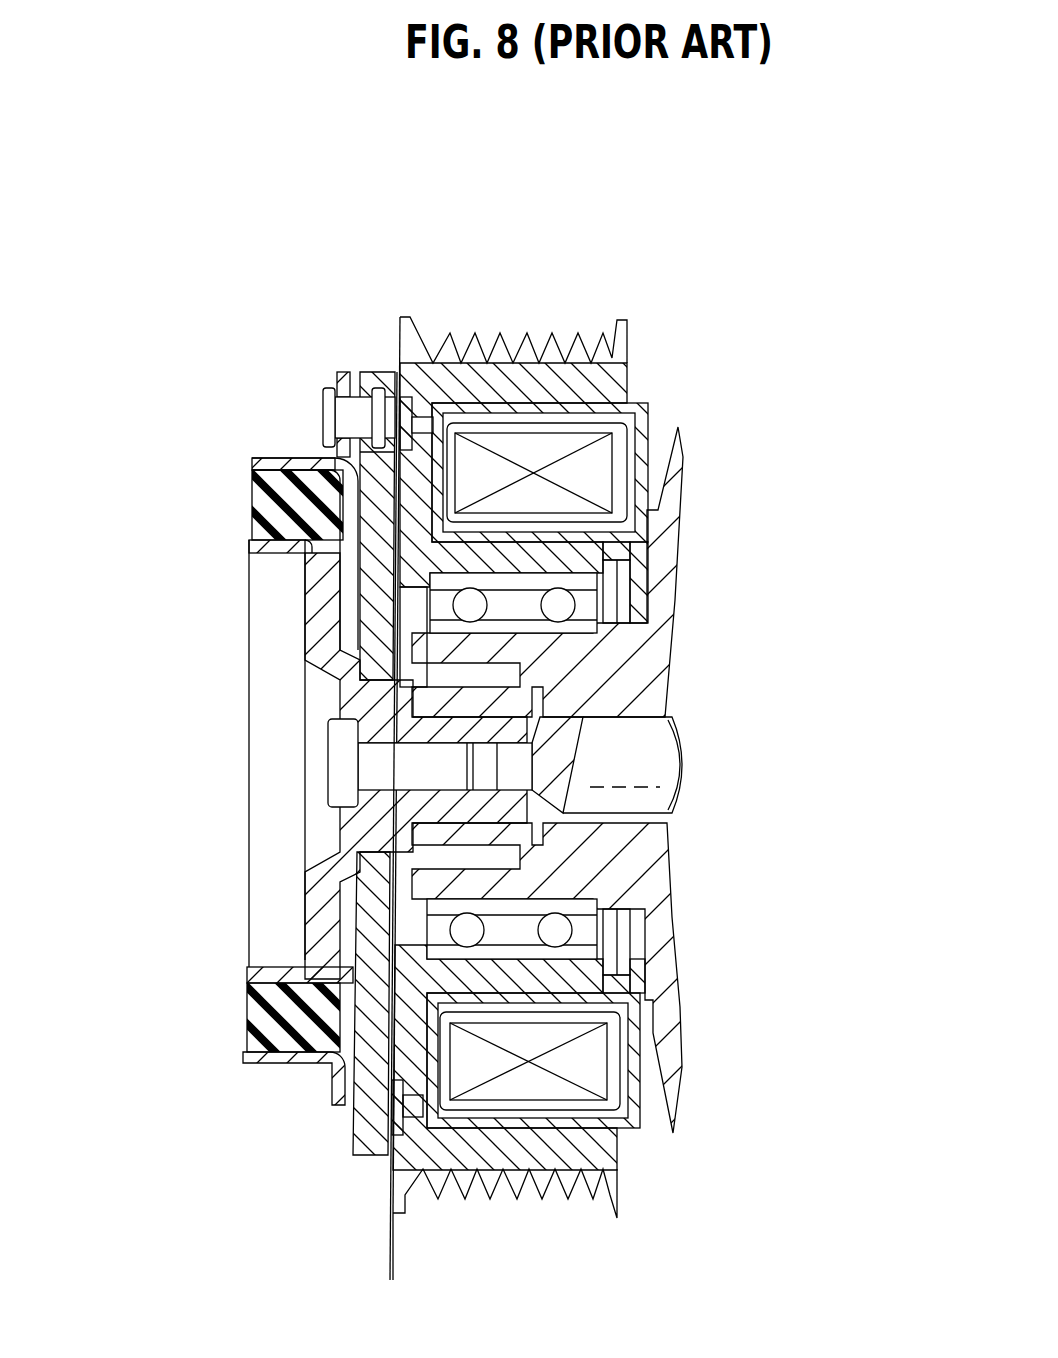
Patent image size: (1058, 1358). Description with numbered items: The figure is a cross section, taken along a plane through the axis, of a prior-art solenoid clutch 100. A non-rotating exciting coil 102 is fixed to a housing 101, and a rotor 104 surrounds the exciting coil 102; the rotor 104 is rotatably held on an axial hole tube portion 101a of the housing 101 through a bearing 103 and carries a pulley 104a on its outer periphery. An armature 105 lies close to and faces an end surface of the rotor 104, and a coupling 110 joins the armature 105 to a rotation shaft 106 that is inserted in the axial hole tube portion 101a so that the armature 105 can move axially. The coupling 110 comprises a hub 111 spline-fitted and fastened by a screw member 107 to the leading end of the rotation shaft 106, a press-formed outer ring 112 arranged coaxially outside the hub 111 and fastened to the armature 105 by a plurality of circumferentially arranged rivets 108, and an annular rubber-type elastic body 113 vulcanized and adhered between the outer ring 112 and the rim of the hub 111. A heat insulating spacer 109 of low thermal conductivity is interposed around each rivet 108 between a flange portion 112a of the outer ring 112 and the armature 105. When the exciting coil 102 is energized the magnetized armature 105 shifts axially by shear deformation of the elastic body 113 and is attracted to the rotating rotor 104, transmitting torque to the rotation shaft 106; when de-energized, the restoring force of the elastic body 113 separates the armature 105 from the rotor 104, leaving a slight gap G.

The solenoid clutch 100 is at (460, 250).
The housing 101 is at (672, 537).
The axial hole tube portion 101a is at (590, 868).
The exciting coil 102 is at (543, 453).
The bearing 103 is at (585, 935).
The rotor 104 is at (462, 387).
The pulley 104a is at (538, 343).
The armature 105 is at (377, 378).
The rotation shaft 106 is at (655, 767).
The screw member 107 is at (332, 765).
The rivet 108 is at (347, 418).
The heat insulating spacer 109 is at (348, 378).
The coupling 110 is at (230, 1044).
The hub 111 is at (317, 618).
The outer ring 112 is at (282, 465).
The flange portion 112a is at (338, 377).
The elastic body 113 is at (268, 512).
The gap G is at (427, 1257).